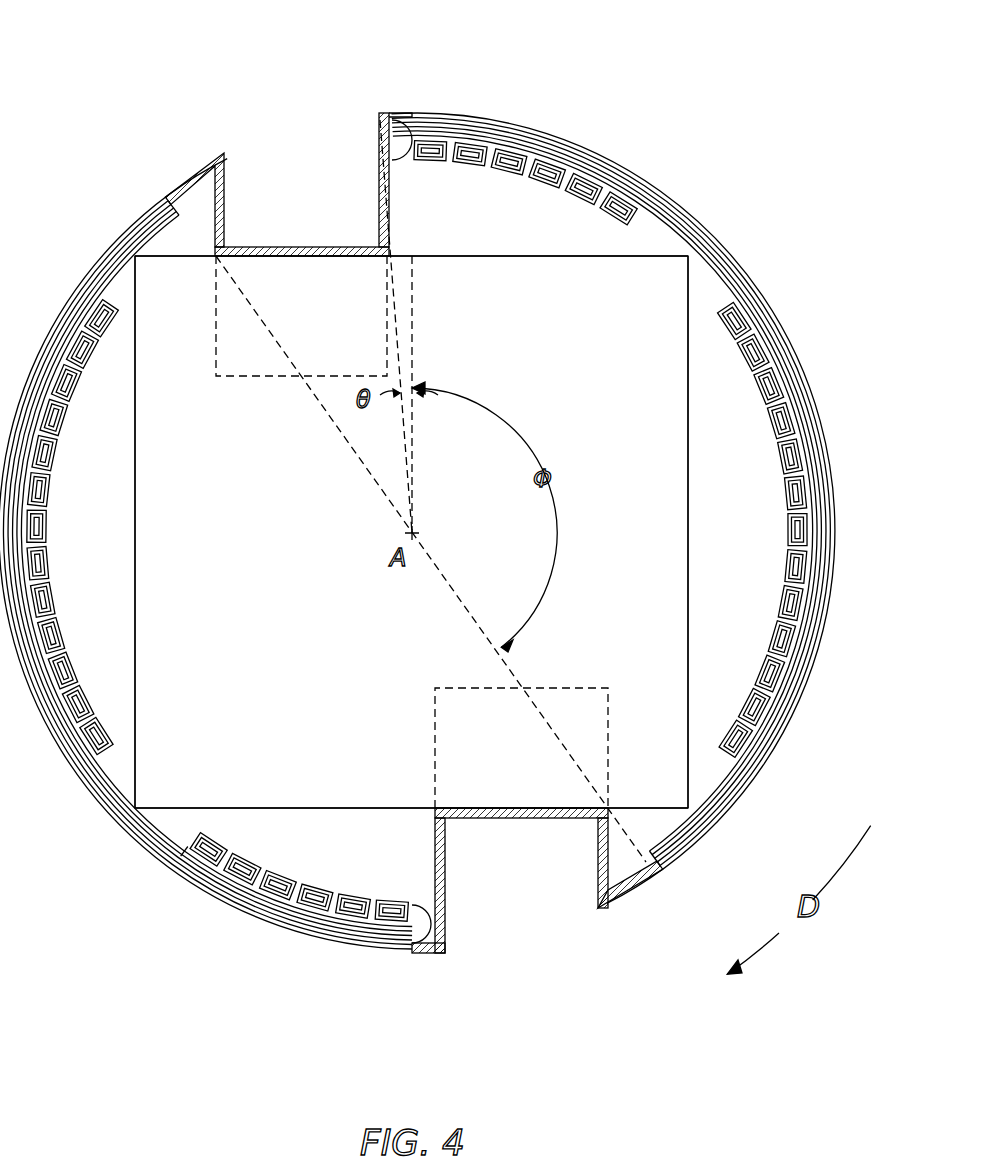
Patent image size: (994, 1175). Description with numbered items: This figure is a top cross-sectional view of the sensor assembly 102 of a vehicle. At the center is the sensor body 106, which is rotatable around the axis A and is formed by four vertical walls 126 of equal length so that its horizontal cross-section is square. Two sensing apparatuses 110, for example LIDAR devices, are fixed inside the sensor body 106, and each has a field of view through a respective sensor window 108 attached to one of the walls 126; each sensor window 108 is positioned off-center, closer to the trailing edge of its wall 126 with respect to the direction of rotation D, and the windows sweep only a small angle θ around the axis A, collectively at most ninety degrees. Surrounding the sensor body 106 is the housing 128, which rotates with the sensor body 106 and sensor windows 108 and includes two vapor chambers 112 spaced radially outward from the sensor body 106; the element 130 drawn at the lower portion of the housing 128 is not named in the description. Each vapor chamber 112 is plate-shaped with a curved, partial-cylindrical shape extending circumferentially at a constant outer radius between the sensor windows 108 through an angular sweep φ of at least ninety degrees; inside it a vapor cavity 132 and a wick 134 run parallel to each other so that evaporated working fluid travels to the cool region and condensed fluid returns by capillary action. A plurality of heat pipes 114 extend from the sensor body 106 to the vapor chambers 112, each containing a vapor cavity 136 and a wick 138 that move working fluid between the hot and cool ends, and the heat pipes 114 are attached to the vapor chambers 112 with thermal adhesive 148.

The sensor assembly 102 is at (148, 46).
The sensor body 106 is at (688, 420).
The sensor window 108 is at (290, 247).
The sensing apparatus 110 is at (238, 377).
The vapor chamber 112 is at (103, 822).
The heat pipe 114 is at (612, 218).
The wall 126 is at (440, 256).
The housing 128 is at (195, 163).
The second tab 130 is at (444, 922).
The vapor cavity 132 is at (343, 933).
The wick 134 is at (370, 943).
The vapor cavity 136 is at (100, 738).
The wick 138 is at (77, 723).
The thermal adhesive 148 is at (383, 130).